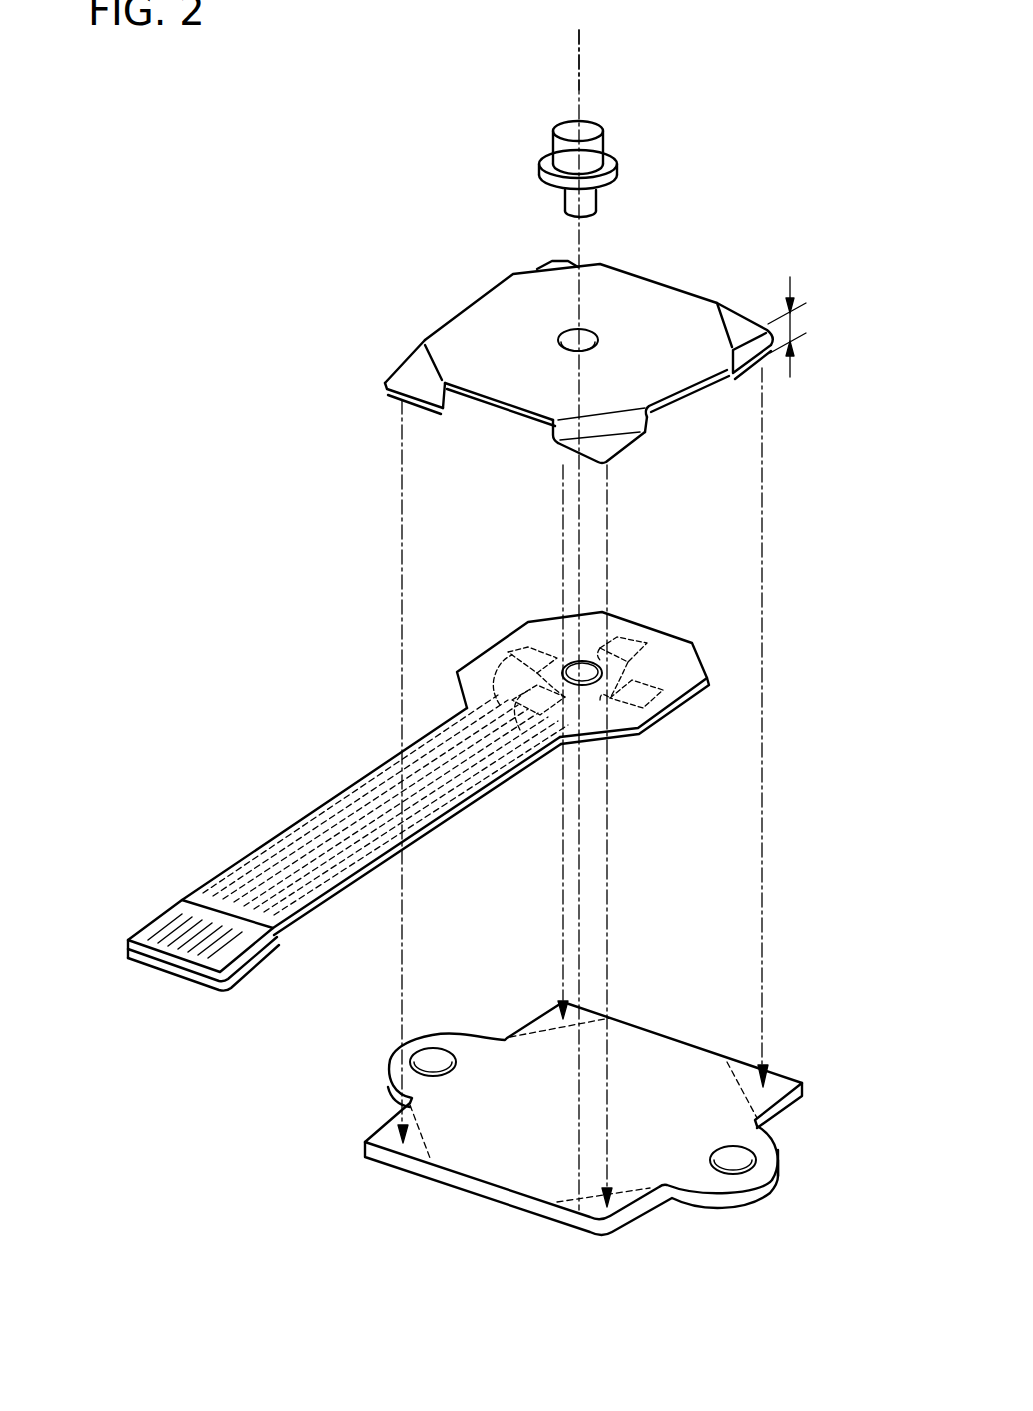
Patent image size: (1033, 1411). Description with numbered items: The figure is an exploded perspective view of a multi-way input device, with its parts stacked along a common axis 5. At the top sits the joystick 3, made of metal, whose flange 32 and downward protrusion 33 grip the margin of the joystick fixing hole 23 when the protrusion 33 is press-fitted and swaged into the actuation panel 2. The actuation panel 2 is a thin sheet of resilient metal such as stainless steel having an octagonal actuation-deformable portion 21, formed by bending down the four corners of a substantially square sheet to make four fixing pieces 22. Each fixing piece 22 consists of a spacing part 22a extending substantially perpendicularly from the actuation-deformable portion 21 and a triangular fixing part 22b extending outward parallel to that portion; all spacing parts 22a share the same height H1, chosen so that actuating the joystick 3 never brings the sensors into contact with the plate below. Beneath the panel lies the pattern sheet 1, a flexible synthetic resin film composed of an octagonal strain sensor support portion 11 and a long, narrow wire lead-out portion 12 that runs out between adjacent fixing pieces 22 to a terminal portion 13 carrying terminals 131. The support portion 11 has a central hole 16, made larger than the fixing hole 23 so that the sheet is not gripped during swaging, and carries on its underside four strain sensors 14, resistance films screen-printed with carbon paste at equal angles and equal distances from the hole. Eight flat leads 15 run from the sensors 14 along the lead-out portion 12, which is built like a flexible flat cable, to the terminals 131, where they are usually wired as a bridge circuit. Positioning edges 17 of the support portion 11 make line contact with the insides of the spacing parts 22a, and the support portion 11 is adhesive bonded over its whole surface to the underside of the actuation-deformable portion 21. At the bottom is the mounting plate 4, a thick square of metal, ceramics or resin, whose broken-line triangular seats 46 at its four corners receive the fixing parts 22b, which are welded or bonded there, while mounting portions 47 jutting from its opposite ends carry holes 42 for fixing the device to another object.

The pattern sheet 1 is at (429, 780).
The actuation panel 2 is at (572, 378).
The joystick 3 is at (397, 579).
The mounting plate 4 is at (591, 1127).
The axis 5 is at (580, 88).
The strain sensor support portion 11 is at (557, 672).
The wire lead-out portion 12 is at (375, 832).
The terminal portion 13 is at (198, 949).
The terminals 131 is at (172, 915).
The strain sensors 14 is at (647, 693).
The leads 15 is at (303, 873).
The hole 16 is at (570, 660).
The positioning edges 17 is at (492, 675).
The actuation-deformable portion 21 is at (530, 330).
The fixing pieces 22 is at (572, 412).
The spacing part 22a is at (637, 420).
The fixing part 22b is at (612, 447).
The joystick fixing hole 23 is at (558, 338).
The flange 32 is at (548, 172).
The downward protrusion 33 is at (568, 209).
The holes 42 is at (433, 1050).
The triangular seats 46 is at (783, 1085).
The mounting portions 47 is at (774, 1179).
The height H1 is at (800, 322).